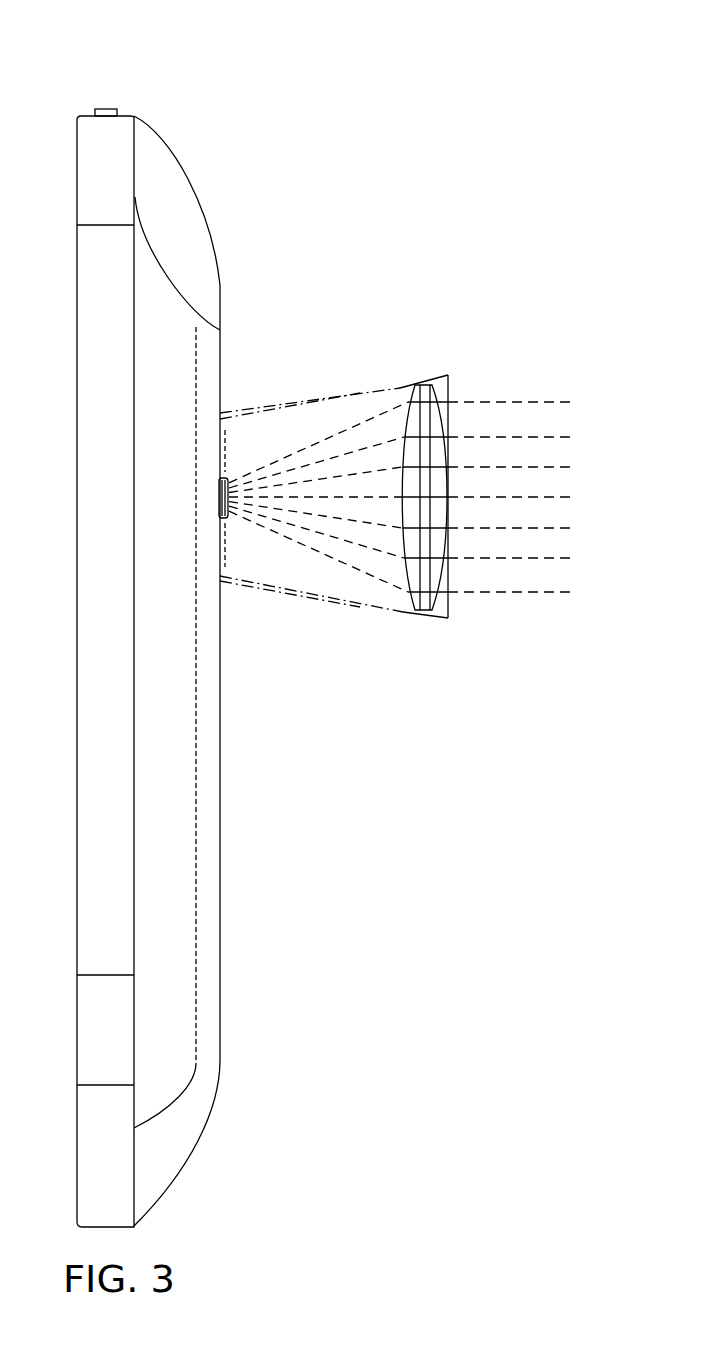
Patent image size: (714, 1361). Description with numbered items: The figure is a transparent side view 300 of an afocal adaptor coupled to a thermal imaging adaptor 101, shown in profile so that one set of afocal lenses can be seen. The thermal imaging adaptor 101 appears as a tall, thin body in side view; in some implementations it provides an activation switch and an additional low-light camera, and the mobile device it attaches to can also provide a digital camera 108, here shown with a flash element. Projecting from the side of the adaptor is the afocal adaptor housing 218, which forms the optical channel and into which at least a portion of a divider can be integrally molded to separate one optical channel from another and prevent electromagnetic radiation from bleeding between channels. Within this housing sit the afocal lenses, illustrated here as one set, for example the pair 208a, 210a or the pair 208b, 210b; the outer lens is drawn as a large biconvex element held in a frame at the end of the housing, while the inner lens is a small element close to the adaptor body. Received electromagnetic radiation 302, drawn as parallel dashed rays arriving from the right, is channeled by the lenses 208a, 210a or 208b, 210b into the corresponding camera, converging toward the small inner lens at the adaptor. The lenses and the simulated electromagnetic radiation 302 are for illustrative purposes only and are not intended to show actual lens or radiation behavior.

The transparent side view 300 is at (95, 82).
The thermal imaging adaptor 101 is at (219, 850).
The digital camera 108 is at (137, 191).
The afocal lens 208b is at (304, 456).
The afocal lens 210b is at (232, 478).
The afocal adaptor housing 218 is at (335, 608).
The afocal lens 208a is at (507, 485).
The afocal lens 210a is at (438, 393).
The received electromagnetic radiation 302 is at (527, 596).